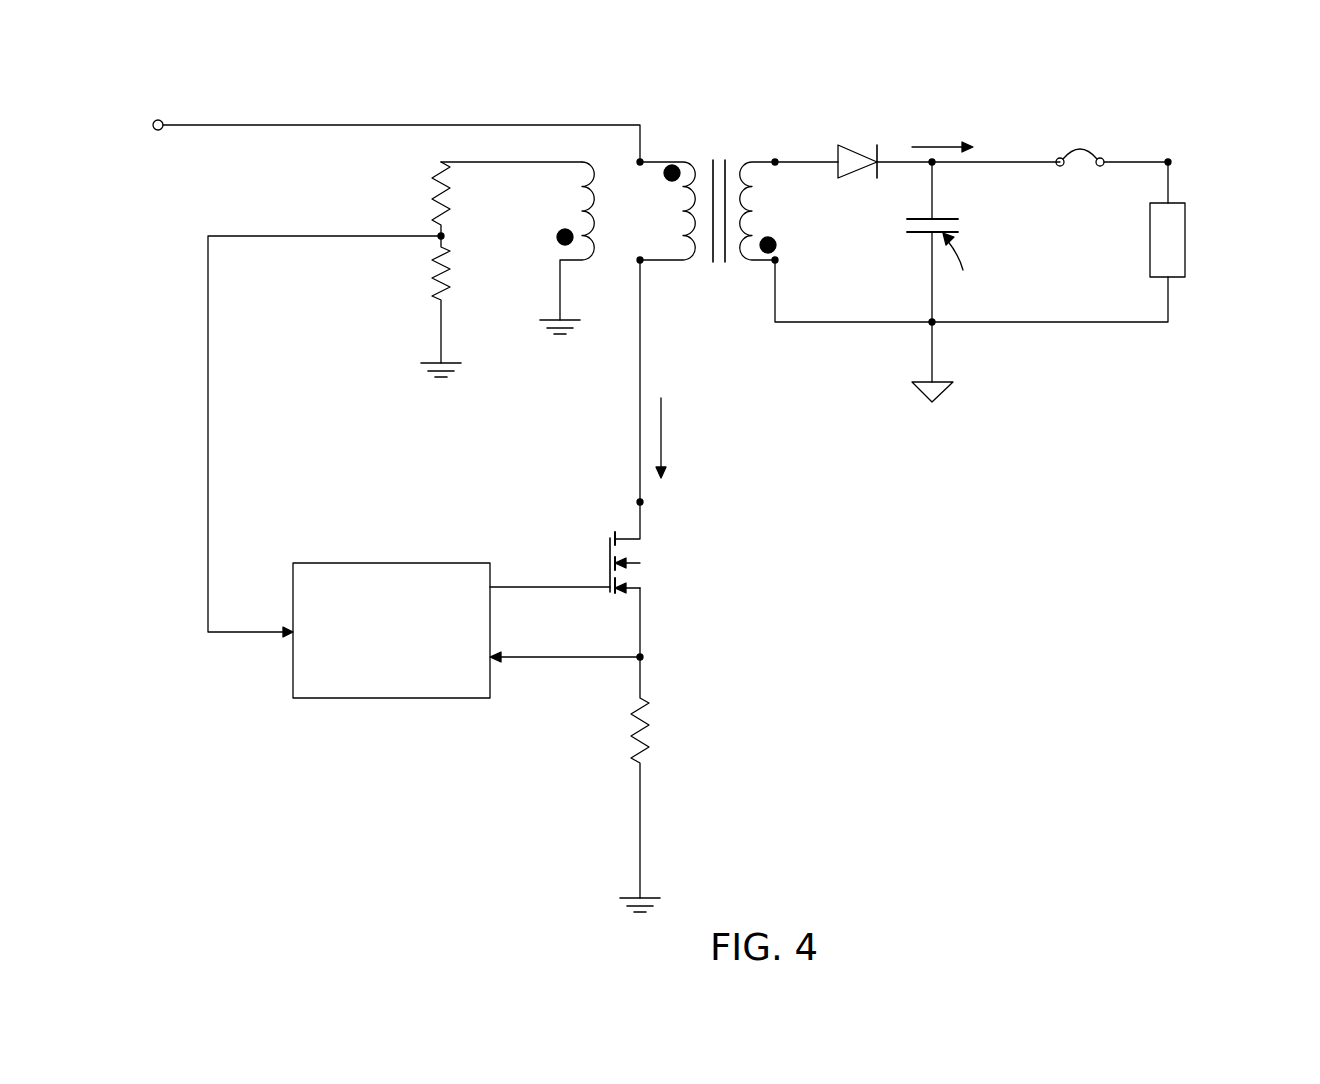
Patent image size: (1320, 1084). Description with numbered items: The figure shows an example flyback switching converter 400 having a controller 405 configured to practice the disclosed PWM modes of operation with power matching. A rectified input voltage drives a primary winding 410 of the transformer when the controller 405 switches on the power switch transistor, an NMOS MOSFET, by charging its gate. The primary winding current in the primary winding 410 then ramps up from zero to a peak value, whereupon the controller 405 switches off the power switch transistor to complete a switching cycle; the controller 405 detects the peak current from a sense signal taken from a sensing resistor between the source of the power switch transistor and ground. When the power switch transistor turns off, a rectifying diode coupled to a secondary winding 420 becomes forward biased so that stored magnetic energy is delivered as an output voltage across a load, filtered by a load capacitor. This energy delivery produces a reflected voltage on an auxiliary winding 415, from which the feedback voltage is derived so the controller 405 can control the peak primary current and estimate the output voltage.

The flyback switching converter 400 is at (710, 69).
The controller 405 is at (391, 563).
The primary winding 410 is at (682, 203).
The auxiliary winding 415 is at (582, 203).
The secondary winding 420 is at (756, 225).